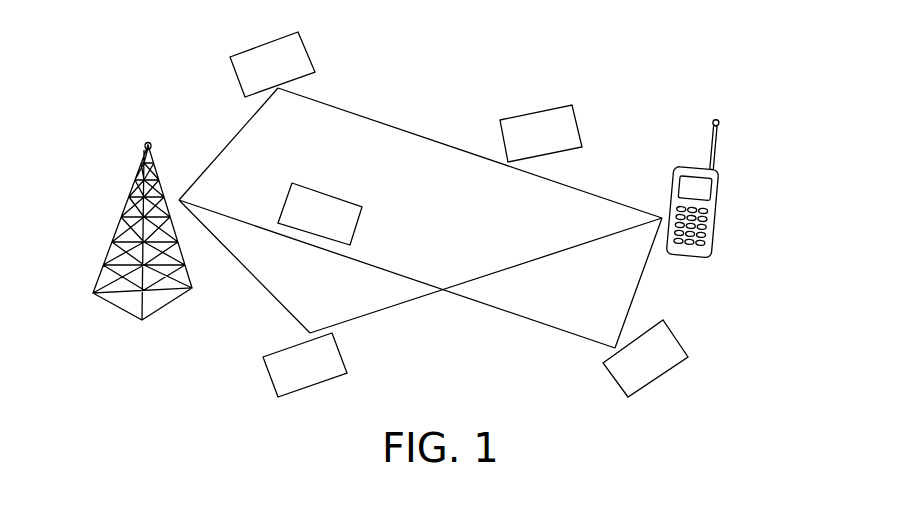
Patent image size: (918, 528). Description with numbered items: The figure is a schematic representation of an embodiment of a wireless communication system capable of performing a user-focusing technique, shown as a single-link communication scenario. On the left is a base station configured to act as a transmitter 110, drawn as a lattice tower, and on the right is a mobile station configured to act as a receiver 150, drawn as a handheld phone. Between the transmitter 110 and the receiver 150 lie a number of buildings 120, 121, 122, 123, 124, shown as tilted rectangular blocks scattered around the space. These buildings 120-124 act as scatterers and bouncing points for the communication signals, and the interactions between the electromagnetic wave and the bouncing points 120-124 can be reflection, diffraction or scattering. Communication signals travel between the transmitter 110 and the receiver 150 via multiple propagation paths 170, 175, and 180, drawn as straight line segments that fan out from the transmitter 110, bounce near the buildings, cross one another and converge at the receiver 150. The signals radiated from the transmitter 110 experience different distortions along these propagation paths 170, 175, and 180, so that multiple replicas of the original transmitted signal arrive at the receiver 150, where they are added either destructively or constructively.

The transmitter 110 is at (120, 207).
The building 120 is at (347, 362).
The building 121 is at (360, 230).
The building 122 is at (312, 46).
The building 123 is at (580, 128).
The building 124 is at (690, 337).
The receiver 150 is at (718, 208).
The propagation path 170 is at (270, 297).
The propagation path 175 is at (518, 320).
The propagation path 180 is at (403, 128).